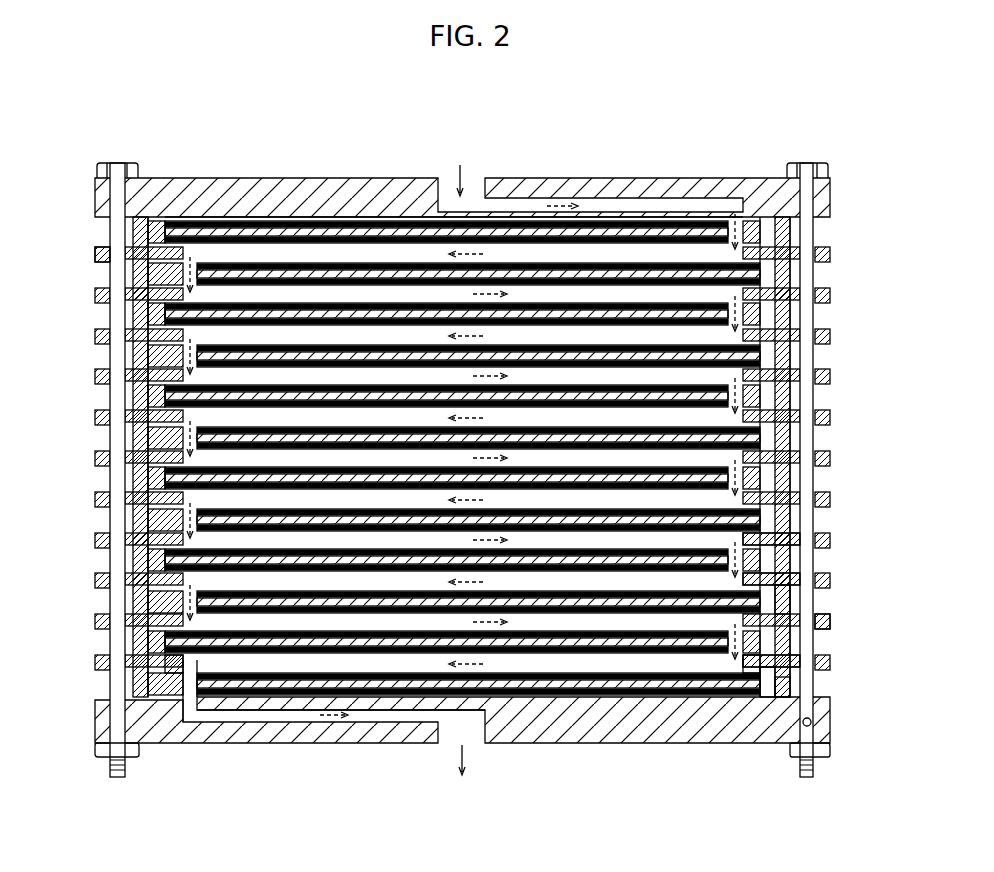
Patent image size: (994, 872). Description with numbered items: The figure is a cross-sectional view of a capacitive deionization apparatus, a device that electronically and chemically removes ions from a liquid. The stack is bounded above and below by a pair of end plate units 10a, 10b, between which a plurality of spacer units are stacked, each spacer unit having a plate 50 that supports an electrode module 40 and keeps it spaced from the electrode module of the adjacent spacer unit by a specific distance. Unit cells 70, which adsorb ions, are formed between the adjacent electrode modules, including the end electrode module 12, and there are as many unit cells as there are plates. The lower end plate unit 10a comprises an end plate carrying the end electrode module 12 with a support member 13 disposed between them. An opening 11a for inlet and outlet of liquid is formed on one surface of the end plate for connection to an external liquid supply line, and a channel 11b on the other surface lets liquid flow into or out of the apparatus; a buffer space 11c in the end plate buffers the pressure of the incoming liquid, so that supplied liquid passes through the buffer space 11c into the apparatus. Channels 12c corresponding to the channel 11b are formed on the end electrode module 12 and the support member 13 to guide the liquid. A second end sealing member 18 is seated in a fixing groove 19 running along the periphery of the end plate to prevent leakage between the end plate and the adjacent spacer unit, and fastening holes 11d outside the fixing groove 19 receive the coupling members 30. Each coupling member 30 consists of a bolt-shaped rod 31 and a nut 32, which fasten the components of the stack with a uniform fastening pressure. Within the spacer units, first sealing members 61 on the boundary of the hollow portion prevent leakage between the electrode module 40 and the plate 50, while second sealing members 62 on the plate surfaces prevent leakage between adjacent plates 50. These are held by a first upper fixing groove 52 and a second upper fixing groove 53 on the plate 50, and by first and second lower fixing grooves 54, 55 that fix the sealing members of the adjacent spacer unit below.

The end plate unit 10a is at (568, 744).
The end plate unit 10b is at (713, 179).
The opening 11a is at (440, 190).
The channel 11b is at (190, 692).
The buffer space 11c is at (290, 724).
The fastening hole 11d is at (811, 722).
The end electrode module 12 is at (510, 232).
The channel 12c is at (164, 663).
The support member 13 is at (397, 222).
The second end sealing member 18 is at (778, 690).
The fixing groove 19 is at (779, 695).
The coupling member 30 is at (97, 164).
The bolt-shaped rod 31 is at (109, 233).
The nut 32 is at (126, 758).
The electrode module 40 is at (583, 268).
The plate 50 is at (827, 458).
The first upper fixing groove 52 is at (746, 664).
The second upper fixing groove 53 is at (791, 637).
The first lower fixing groove 54 is at (779, 672).
The second lower fixing groove 55 is at (791, 678).
The first sealing member 61 is at (796, 557).
The second sealing member 62 is at (769, 580).
The unit cell 70 is at (326, 295).